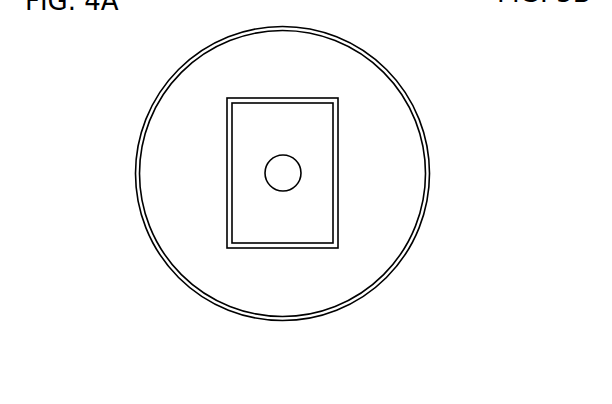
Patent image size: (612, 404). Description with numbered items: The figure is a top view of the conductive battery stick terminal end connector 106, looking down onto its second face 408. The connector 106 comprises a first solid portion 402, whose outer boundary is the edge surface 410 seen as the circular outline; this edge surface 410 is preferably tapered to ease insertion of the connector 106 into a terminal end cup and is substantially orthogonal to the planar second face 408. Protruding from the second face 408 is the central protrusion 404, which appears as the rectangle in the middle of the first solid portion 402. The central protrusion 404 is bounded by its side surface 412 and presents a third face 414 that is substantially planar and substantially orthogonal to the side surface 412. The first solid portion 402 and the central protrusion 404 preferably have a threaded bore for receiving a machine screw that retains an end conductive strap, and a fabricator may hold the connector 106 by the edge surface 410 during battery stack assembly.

The conductive battery stick terminal end connector 106 is at (104, 179).
The first solid portion 402 is at (445, 207).
The central protrusion 404 is at (214, 208).
The second face 408 is at (293, 59).
The edge surface 410 is at (427, 133).
The side surface 412 is at (338, 150).
The third face 414 is at (250, 119).